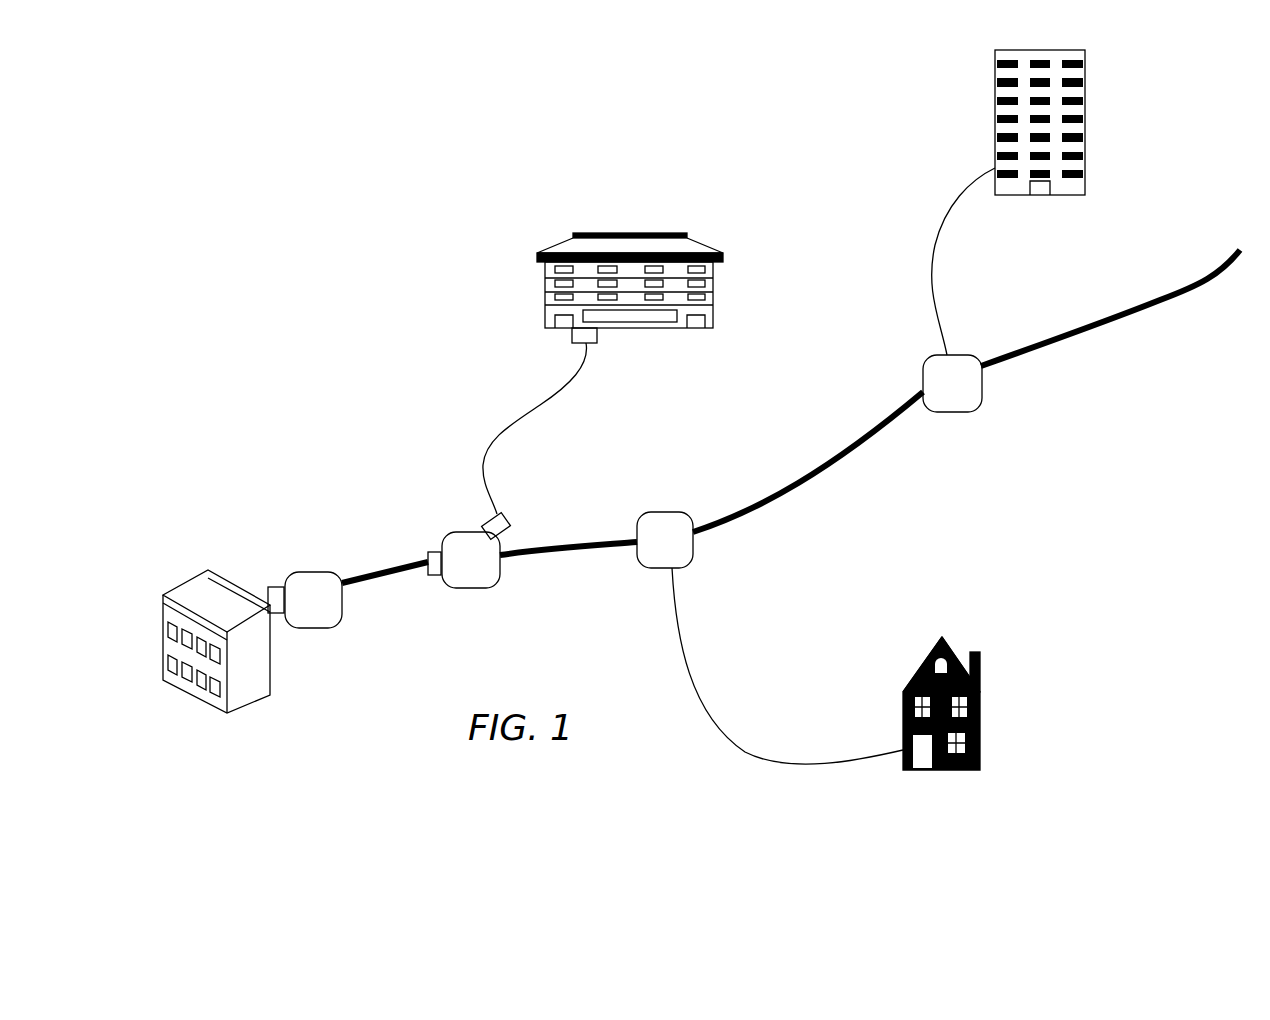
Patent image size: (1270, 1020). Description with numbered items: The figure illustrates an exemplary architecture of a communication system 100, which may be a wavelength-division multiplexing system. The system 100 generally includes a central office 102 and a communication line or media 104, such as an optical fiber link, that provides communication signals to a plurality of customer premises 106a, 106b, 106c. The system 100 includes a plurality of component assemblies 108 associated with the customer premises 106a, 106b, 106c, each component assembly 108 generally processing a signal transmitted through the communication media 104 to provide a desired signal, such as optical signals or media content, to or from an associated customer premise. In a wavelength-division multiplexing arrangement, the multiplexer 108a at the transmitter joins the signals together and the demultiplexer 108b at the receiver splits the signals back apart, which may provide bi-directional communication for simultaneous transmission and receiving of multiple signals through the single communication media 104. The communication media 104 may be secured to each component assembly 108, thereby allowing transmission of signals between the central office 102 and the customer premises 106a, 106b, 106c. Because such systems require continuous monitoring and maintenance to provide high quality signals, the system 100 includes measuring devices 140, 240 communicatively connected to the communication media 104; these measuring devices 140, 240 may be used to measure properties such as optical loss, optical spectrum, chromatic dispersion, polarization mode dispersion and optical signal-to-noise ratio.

The communication system 100 is at (345, 232).
The central office 102 is at (228, 587).
The communication line or media 104 is at (385, 567).
The customer premises 106a is at (630, 309).
The customer premises 106b is at (937, 731).
The customer premises 106c is at (1040, 149).
The component assembly 108 is at (922, 383).
The multiplexer 108a is at (313, 630).
The demultiplexer 108b is at (473, 590).
The measuring device 140 is at (277, 582).
The measuring device 240 is at (480, 518).